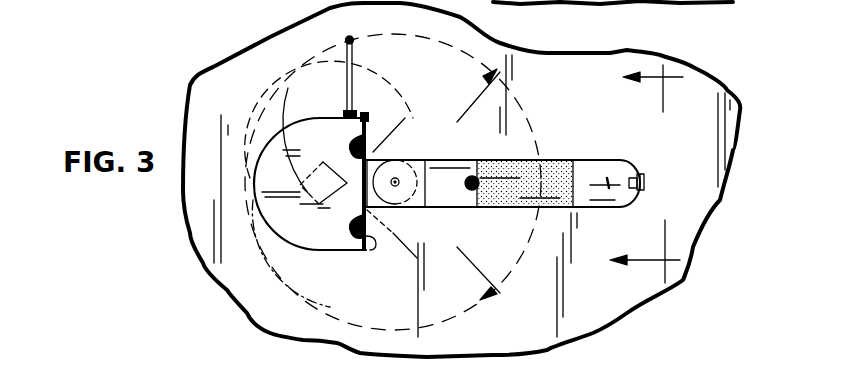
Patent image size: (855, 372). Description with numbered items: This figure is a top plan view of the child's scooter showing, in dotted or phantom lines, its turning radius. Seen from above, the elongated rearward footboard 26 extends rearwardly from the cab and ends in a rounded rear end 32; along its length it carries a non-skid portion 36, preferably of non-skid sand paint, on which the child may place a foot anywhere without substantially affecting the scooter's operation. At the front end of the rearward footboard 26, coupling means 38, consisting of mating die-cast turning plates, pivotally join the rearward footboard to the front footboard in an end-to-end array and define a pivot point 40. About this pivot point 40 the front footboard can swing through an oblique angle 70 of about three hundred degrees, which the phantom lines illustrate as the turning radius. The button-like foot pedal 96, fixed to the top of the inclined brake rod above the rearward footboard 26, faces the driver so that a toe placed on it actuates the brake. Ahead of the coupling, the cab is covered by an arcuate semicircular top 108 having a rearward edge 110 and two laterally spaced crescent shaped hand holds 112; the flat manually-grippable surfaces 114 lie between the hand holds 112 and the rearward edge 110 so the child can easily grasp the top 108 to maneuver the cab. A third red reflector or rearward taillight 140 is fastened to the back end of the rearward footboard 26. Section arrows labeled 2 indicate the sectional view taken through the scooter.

The section line 2- 2 is at (646, 181).
The rearward footboard 26 is at (603, 160).
The rounded rear end 32 is at (645, 185).
The non-skid portion 36 is at (527, 160).
The coupling means 38 is at (394, 208).
The pivot point 40 is at (397, 178).
The oblique angle 70 is at (393, 179).
The foot pedal 96 is at (467, 186).
The top 108 is at (326, 119).
The rearward edge 110 is at (386, 181).
The hand holds 112 is at (348, 149).
The manually-grippable surfaces 114 is at (386, 243).
The rearward taillight 140 is at (645, 176).